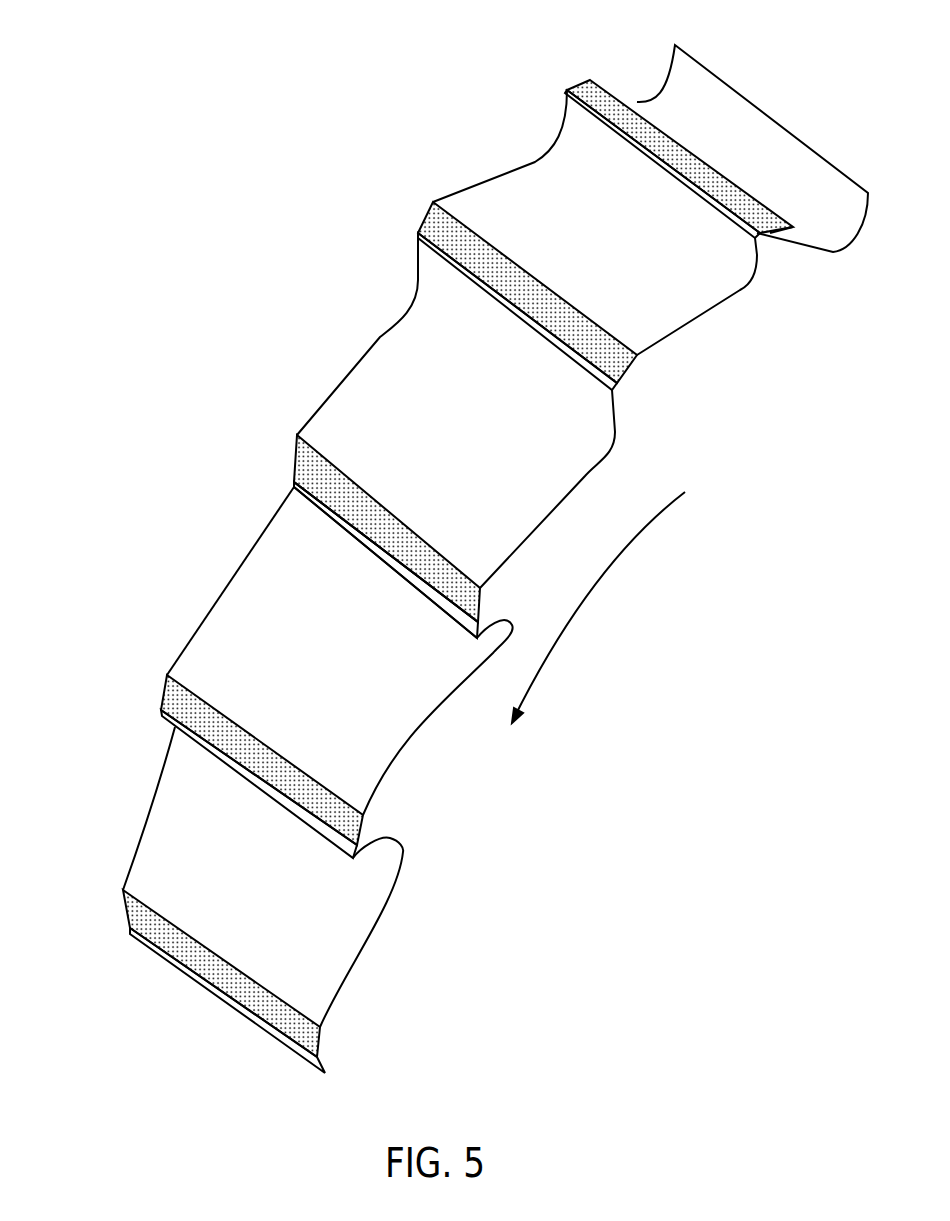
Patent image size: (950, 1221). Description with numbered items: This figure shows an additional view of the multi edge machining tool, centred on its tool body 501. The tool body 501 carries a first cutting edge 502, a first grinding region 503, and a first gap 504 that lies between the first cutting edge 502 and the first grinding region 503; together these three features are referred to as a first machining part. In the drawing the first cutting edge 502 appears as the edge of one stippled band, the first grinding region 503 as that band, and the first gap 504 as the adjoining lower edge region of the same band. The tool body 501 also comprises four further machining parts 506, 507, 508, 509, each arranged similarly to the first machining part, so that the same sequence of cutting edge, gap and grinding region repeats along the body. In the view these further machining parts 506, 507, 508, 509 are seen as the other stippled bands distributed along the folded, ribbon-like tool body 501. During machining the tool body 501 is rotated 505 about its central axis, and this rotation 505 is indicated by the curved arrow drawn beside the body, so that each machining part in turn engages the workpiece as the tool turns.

The tool body 501 is at (190, 290).
The first cutting edge 502 is at (353, 538).
The first grinding region 503 is at (293, 463).
The first gap 504 is at (408, 575).
The rotation 505 is at (577, 606).
The further machining part 506 is at (121, 915).
The further machining part 507 is at (162, 690).
The further machining part 508 is at (417, 233).
The further machining part 509 is at (590, 80).